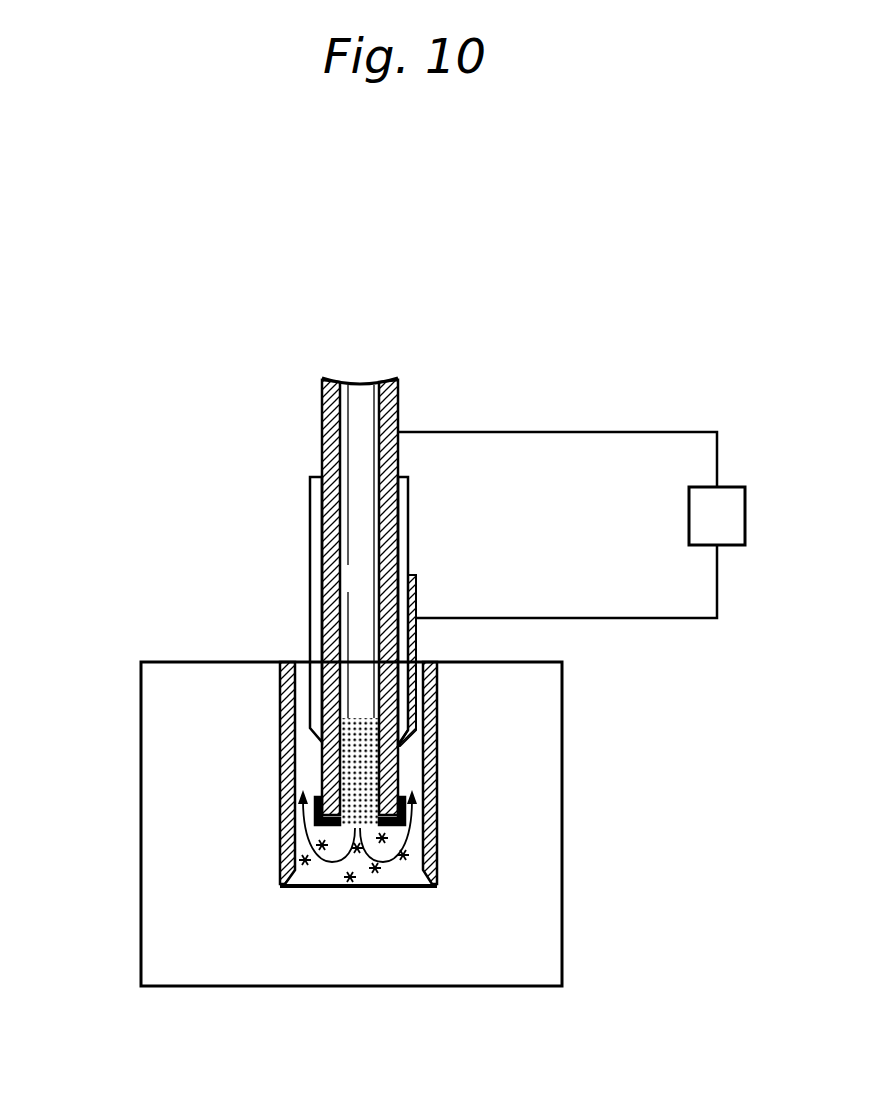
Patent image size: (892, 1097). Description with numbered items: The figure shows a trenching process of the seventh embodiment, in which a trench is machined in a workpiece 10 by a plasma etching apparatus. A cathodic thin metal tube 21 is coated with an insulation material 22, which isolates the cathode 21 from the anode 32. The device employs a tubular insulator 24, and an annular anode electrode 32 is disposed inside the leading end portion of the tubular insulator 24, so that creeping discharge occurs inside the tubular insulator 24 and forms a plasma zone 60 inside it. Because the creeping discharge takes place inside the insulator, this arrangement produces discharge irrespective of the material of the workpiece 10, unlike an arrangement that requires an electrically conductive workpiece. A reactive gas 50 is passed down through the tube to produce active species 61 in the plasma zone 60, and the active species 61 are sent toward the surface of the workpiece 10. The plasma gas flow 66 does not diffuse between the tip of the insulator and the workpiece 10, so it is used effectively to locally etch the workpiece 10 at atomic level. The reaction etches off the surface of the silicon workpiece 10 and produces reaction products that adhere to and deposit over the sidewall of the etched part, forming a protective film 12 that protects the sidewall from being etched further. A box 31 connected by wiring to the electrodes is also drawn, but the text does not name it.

The workpiece 10 is at (547, 962).
The protective film 12 is at (282, 765).
The cathodic thin metal tube 21 is at (408, 398).
The insulation material 22 is at (313, 603).
The tubular insulator 24 is at (322, 760).
The power source 31 is at (740, 524).
The annular anode electrode 32 is at (437, 685).
The reactive gas 50 is at (358, 370).
The plasma zone 60 is at (325, 795).
The active species 61 is at (380, 868).
The plasma gas flow 66 is at (407, 823).